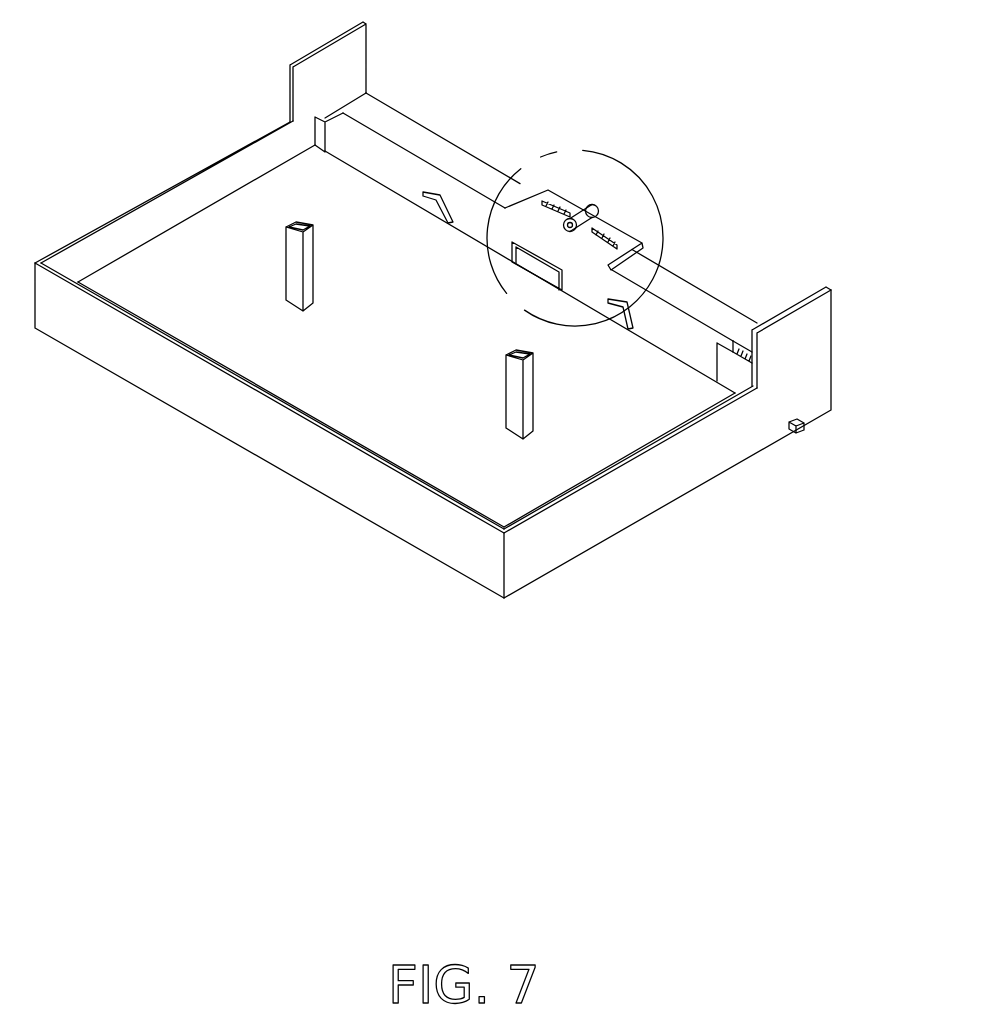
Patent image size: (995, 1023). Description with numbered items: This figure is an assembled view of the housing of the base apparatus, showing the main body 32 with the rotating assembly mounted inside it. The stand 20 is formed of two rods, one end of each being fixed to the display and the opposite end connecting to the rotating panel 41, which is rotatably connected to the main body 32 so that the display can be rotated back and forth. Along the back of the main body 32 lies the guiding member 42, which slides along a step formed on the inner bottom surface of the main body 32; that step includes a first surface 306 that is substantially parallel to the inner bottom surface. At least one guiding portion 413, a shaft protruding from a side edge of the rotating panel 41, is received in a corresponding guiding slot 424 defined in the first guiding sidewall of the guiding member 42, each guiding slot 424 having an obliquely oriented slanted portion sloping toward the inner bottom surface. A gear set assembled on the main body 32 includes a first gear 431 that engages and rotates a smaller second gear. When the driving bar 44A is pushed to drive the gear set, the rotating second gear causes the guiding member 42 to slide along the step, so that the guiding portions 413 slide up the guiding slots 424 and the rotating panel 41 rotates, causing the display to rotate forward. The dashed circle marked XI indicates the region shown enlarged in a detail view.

The stand 20 is at (523, 412).
The main body 32 is at (278, 440).
The rotating panel 41 is at (640, 425).
The guiding member 42 is at (362, 138).
The first surface 306 is at (420, 142).
The guiding portion 413 is at (678, 300).
The guiding slot 424 is at (648, 302).
The first gear 431 is at (758, 342).
The driving bar 44A is at (801, 429).
The detail view XI region XI is at (623, 178).